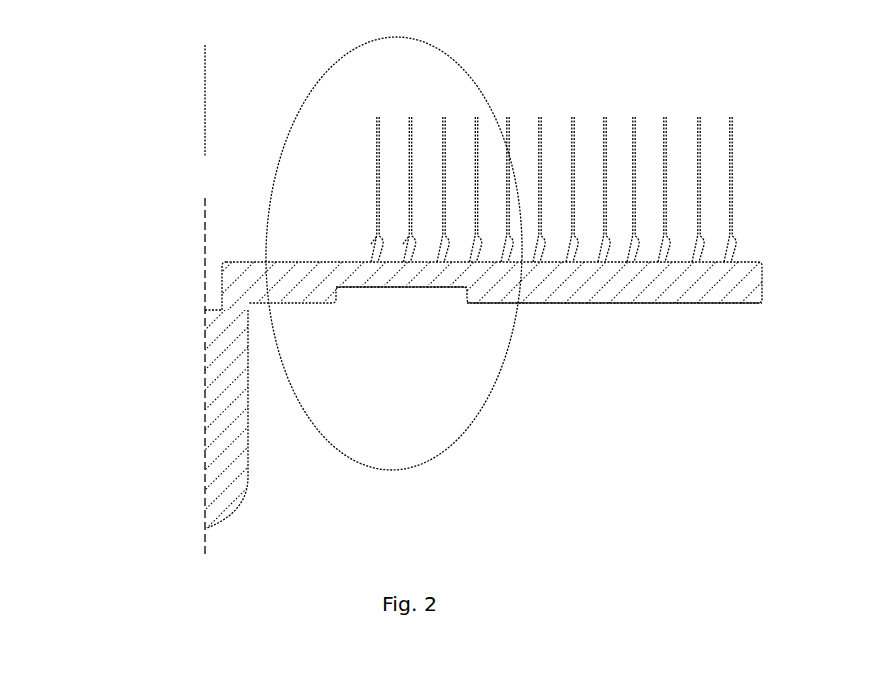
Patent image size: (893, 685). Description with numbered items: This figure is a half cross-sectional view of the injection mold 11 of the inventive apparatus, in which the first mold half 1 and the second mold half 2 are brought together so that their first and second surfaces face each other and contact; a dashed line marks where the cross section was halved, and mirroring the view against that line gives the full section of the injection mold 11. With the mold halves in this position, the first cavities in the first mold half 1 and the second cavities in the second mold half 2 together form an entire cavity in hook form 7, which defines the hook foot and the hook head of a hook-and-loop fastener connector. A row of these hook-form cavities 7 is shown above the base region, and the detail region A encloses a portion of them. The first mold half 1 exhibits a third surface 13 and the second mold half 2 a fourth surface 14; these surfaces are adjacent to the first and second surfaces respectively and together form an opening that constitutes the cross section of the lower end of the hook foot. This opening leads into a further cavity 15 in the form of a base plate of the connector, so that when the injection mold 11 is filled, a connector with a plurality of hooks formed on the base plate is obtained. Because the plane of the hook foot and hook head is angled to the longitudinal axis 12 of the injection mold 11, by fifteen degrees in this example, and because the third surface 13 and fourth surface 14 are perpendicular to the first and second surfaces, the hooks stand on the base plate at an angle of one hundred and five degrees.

The first mold half 1 is at (544, 162).
The second mold half 2 is at (395, 127).
The entire cavity in hook form 7 is at (370, 248).
The injection mold 11 is at (145, 133).
The longitudinal axis 12 is at (207, 101).
The third surface 13 is at (427, 263).
The fourth surface 14 is at (392, 265).
The further cavity 15 is at (625, 288).
The detail region A is at (507, 365).